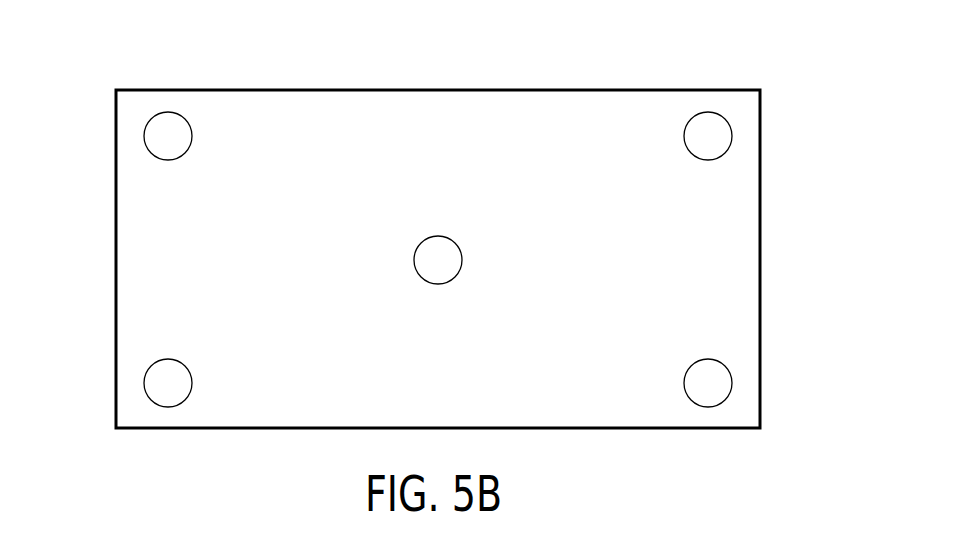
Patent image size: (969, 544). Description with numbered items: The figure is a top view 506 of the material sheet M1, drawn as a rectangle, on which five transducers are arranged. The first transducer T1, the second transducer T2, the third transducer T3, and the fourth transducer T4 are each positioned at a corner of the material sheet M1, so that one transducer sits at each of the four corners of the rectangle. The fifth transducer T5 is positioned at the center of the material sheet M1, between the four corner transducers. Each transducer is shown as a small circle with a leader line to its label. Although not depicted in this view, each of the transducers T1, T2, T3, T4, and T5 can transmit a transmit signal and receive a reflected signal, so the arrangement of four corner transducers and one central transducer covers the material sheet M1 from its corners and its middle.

The top view 506 is at (478, 222).
The material sheet M1 is at (438, 259).
The first transducer T1 is at (167, 382).
The second transducer T2 is at (709, 382).
The third transducer T3 is at (167, 137).
The fourth transducer T4 is at (708, 137).
The fifth transducer T5 is at (438, 261).